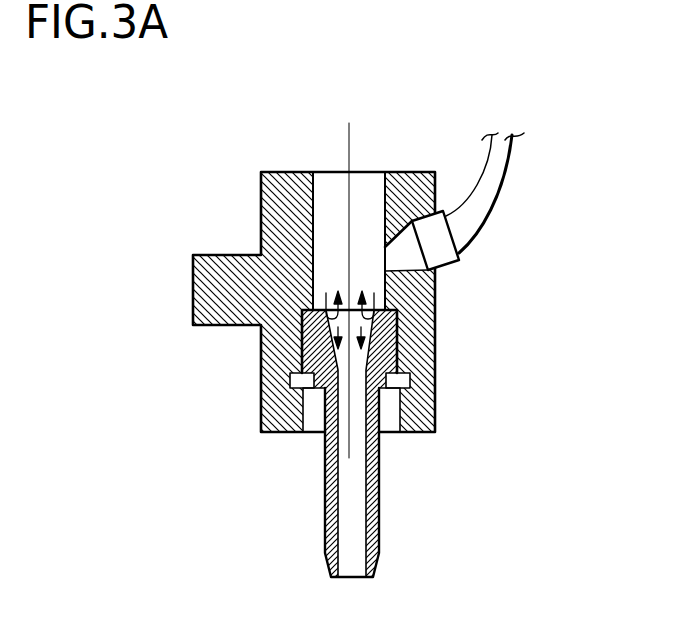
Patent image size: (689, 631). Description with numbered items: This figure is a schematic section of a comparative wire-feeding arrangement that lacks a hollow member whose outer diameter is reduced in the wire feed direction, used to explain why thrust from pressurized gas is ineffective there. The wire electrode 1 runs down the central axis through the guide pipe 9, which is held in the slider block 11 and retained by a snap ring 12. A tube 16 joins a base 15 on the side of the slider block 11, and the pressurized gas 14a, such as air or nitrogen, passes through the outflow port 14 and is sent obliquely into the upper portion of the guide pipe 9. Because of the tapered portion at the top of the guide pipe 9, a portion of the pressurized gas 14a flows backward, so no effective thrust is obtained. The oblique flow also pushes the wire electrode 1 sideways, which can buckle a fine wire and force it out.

The wire electrode 1 is at (348, 145).
The guide pipe 9 is at (380, 515).
The slider block 11 is at (213, 262).
The snap ring 12 is at (405, 378).
The outflow port 14 is at (435, 283).
The pressurized gas 14a is at (364, 267).
The base 15 is at (450, 255).
The tube 16 is at (499, 181).